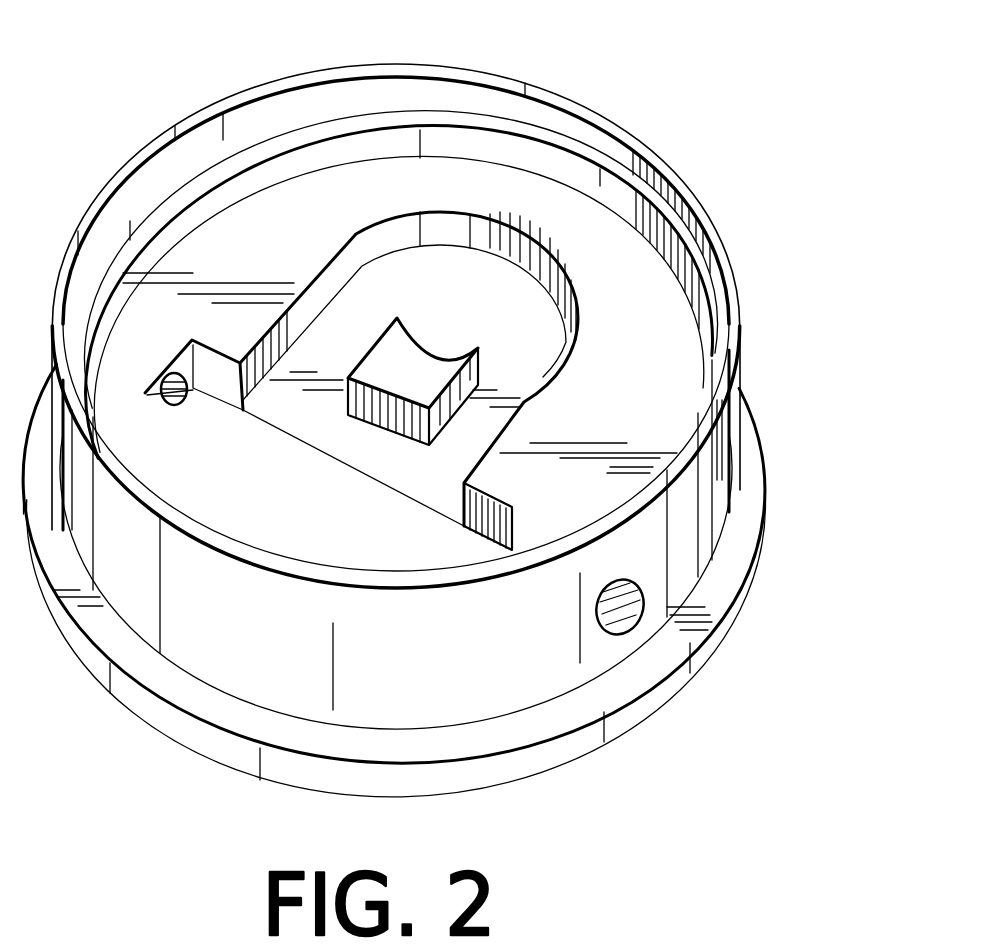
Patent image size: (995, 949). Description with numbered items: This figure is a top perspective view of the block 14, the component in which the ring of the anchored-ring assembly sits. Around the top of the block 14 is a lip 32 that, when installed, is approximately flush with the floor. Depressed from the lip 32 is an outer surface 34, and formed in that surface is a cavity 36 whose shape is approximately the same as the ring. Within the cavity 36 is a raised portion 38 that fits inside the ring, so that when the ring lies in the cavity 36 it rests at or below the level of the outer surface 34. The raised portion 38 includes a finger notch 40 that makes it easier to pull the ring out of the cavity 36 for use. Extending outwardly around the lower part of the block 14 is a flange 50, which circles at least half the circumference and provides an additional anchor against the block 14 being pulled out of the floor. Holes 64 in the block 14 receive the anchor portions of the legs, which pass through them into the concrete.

The block 14 is at (787, 100).
The lip 32 is at (562, 96).
The outer surface 34 is at (630, 434).
The cavity 36 is at (348, 262).
The raised portion 38 is at (362, 410).
The finger notch 40 is at (423, 350).
The flange 50 is at (145, 723).
The hole 64 is at (190, 400).